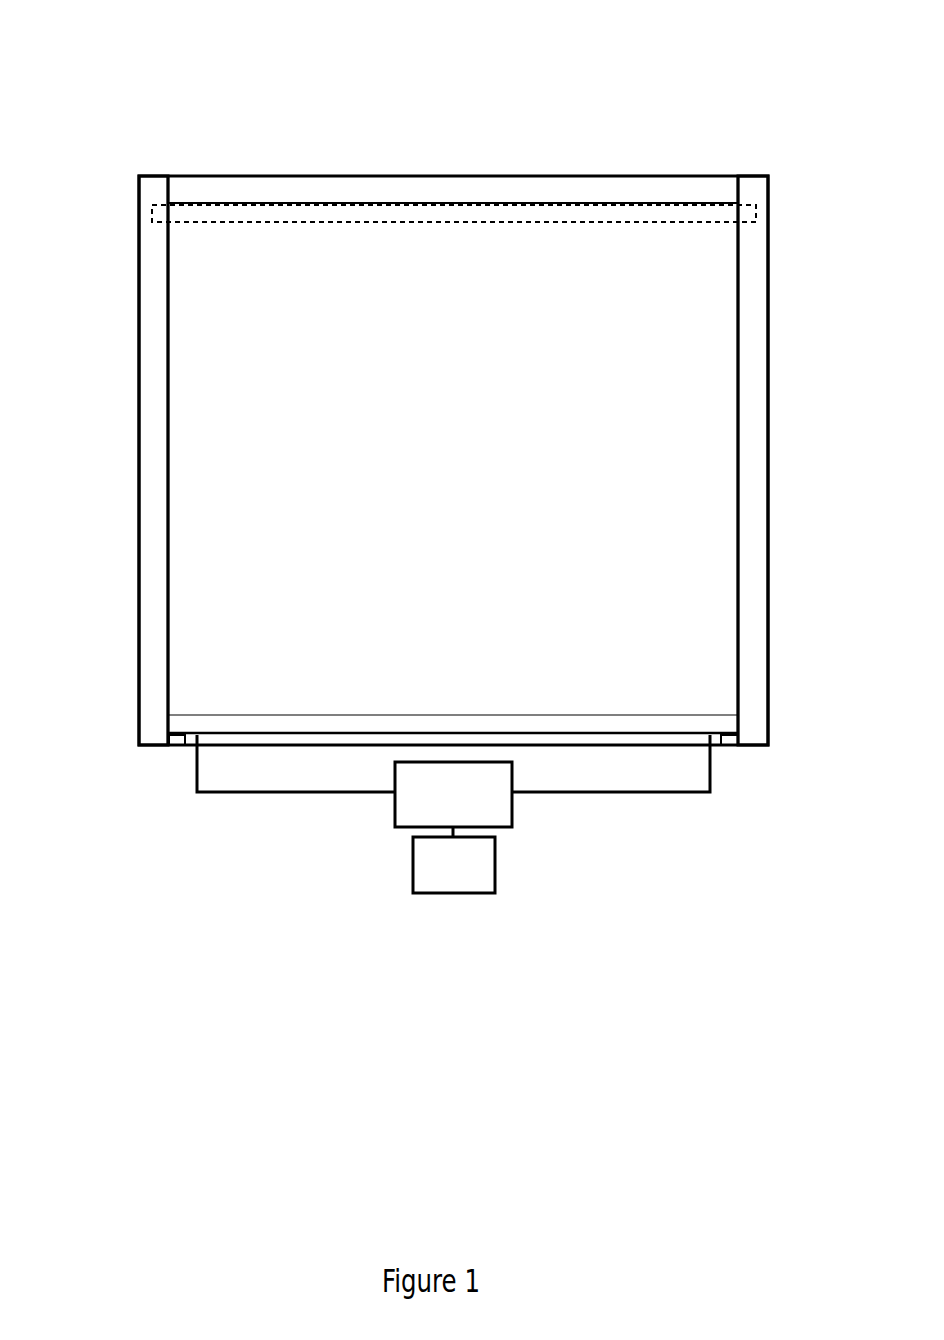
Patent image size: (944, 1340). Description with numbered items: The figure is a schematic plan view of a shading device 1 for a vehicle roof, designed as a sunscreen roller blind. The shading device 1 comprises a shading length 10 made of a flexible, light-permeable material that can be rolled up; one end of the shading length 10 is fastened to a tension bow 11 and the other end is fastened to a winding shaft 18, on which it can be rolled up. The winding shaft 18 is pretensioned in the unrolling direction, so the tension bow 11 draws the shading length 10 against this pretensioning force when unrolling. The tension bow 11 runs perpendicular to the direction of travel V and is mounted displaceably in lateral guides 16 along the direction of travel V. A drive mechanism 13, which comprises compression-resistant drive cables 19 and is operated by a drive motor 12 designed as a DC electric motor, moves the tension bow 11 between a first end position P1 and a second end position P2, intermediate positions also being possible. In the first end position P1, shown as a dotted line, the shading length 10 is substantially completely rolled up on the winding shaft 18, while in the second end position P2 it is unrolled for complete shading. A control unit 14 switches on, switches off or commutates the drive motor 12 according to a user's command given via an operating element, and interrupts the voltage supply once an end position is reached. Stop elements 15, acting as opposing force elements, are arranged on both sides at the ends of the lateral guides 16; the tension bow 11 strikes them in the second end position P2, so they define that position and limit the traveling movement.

The shading device 1 is at (162, 110).
The shading length 10 is at (693, 347).
The tension bow 11 is at (447, 207).
The drive motor 12 is at (453, 794).
The drive mechanism 13 is at (490, 871).
The control unit 14 is at (454, 865).
The stop element 15 is at (178, 747).
The lateral guides 16 is at (150, 500).
The winding shaft 18 is at (588, 187).
The drive cables 19 is at (232, 793).
The first end position P1 is at (110, 211).
The second end position P2 is at (110, 721).
The direction of travel V is at (453, 388).